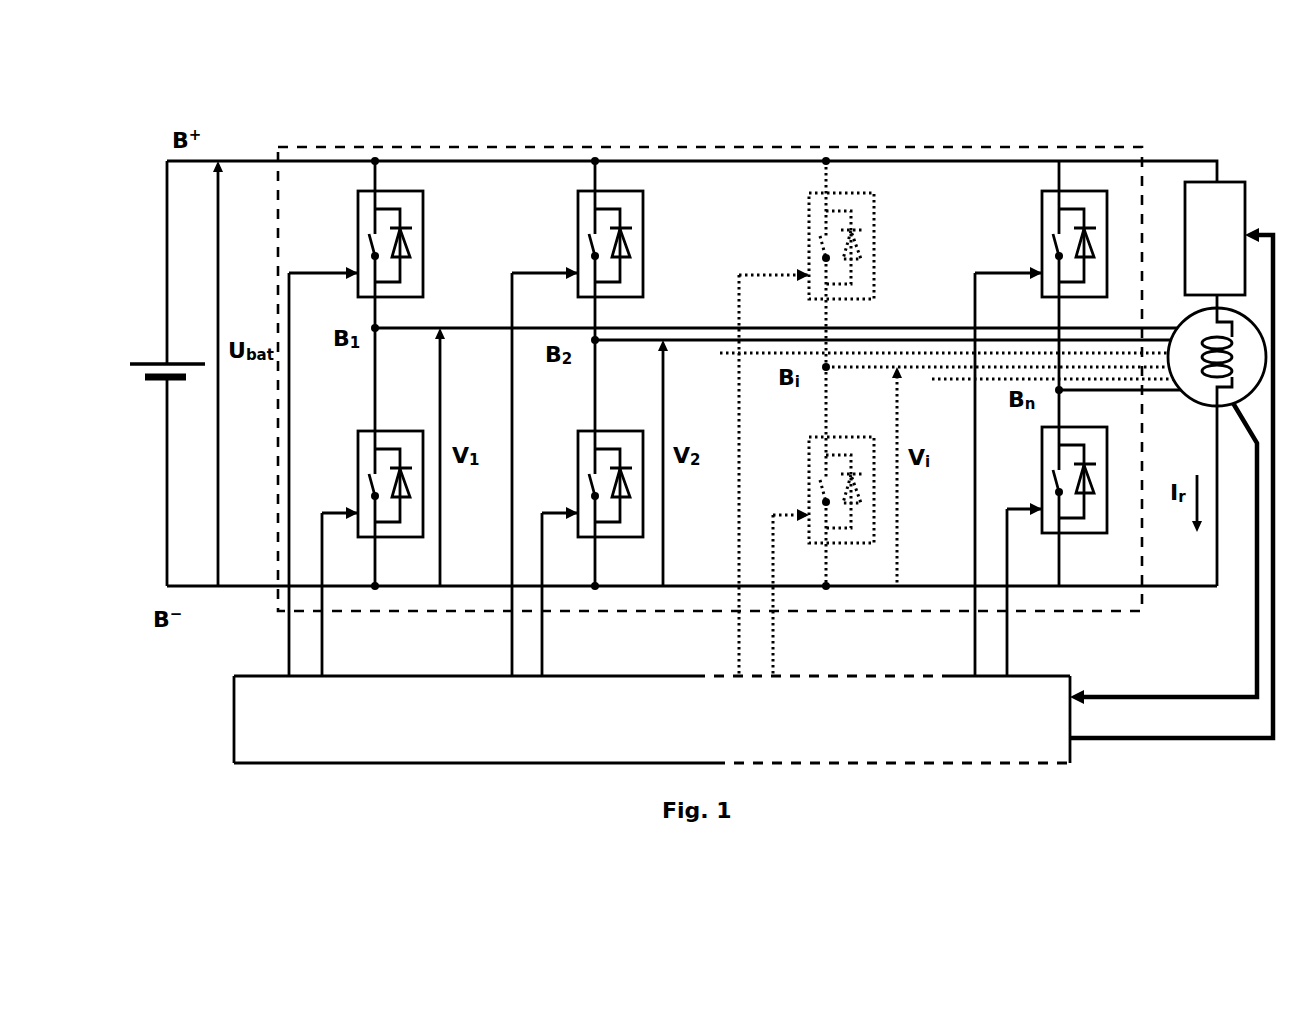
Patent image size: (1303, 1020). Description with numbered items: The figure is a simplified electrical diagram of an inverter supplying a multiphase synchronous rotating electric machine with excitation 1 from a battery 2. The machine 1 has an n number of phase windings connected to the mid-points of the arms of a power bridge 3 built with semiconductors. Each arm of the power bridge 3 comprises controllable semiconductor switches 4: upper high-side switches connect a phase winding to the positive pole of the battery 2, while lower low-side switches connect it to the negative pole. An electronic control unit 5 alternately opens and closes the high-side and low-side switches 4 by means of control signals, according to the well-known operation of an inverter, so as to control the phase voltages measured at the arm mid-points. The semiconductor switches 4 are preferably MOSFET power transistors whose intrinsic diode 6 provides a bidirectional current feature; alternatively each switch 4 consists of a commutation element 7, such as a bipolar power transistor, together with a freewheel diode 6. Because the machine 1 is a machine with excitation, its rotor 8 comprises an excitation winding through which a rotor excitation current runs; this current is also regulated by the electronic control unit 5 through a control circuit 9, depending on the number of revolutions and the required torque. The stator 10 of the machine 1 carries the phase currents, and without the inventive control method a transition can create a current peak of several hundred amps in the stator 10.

The multiphase rotating electric machine with excitation 1 is at (1177, 115).
The battery 2 is at (171, 362).
The power bridge 3 is at (455, 144).
The controllable semiconductor switch 4 is at (424, 214).
The electronic control unit 5 is at (234, 723).
The diode 6 is at (412, 230).
The commutation element 7 is at (372, 251).
The rotor 8 is at (1232, 373).
The control circuit 9 is at (1244, 181).
The stator 10 is at (1193, 401).